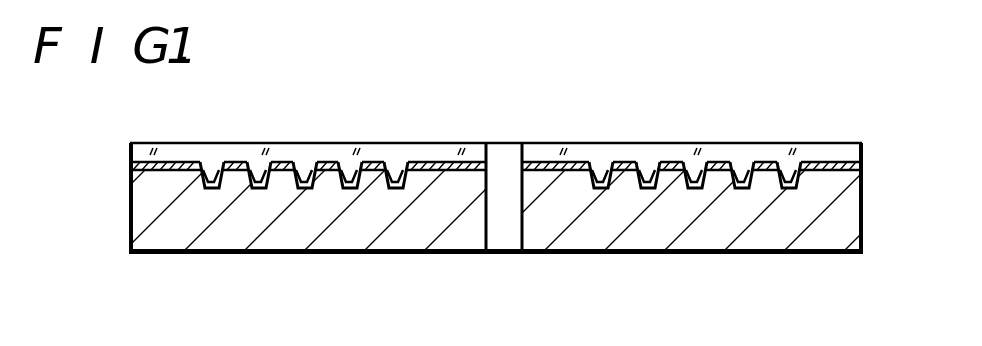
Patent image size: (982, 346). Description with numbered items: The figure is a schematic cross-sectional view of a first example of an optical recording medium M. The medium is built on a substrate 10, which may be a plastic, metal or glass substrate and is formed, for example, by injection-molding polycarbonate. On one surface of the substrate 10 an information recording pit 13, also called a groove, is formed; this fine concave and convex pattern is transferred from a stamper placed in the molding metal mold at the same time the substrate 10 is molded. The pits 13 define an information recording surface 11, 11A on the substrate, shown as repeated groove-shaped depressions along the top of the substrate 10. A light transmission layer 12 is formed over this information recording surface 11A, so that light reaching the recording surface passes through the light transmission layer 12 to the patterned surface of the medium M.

The substrate 10 is at (752, 237).
The information recording surface 11 is at (372, 168).
The information recording surface 11A is at (718, 162).
The light transmission layer 12 is at (537, 150).
The information recording pit 13 is at (301, 170).
The optical recording medium M is at (350, 293).